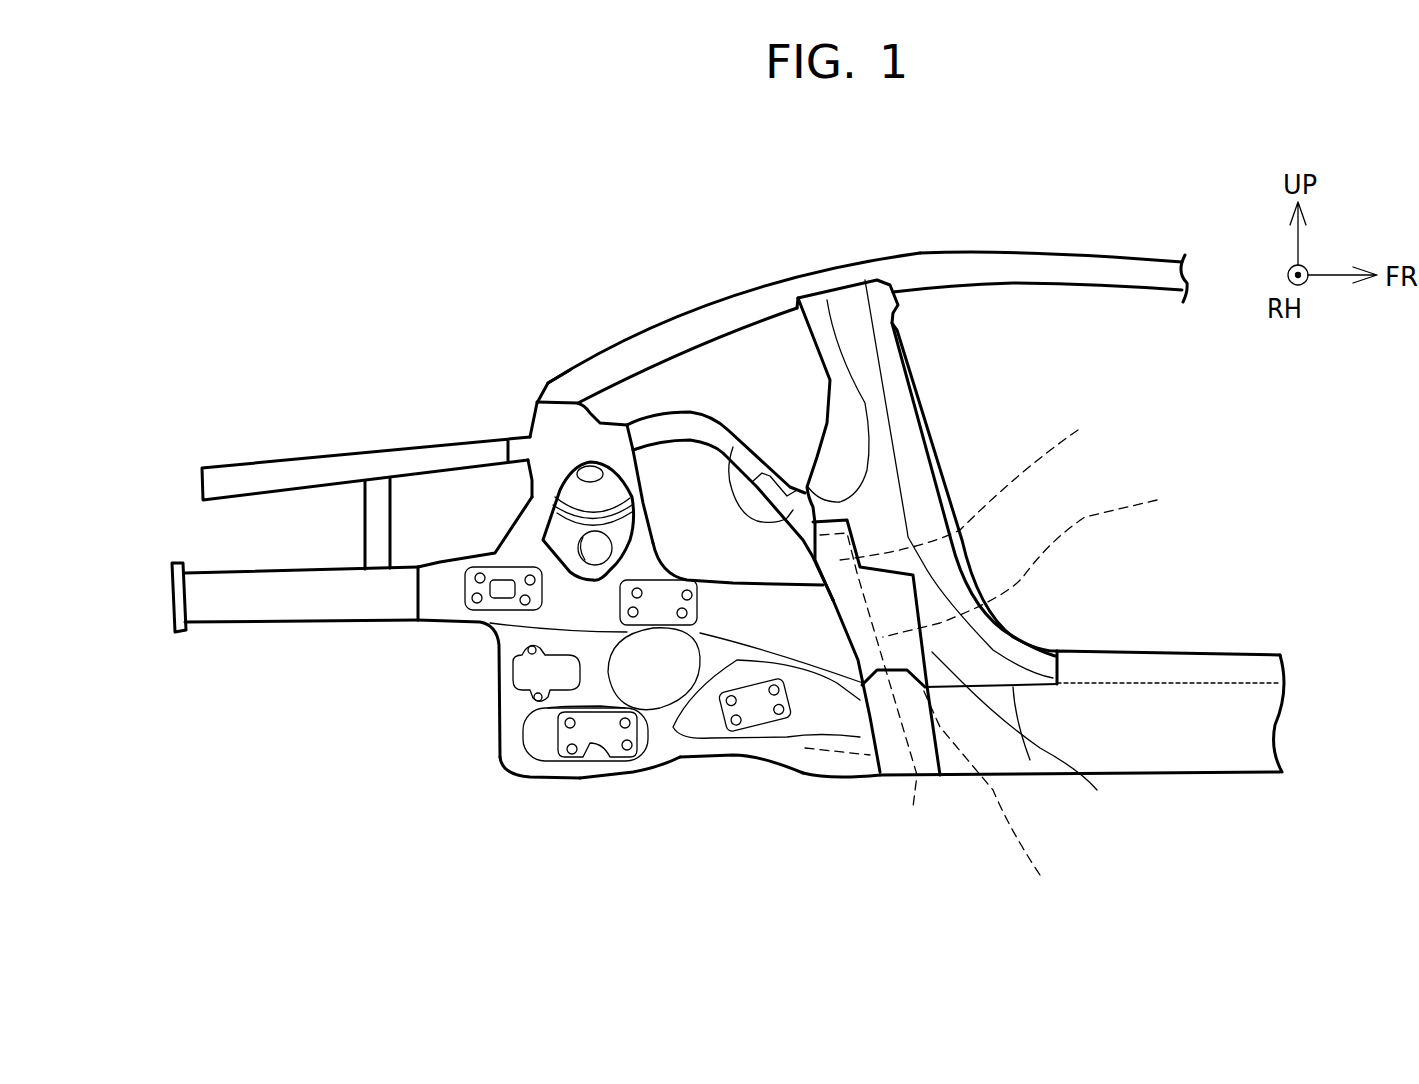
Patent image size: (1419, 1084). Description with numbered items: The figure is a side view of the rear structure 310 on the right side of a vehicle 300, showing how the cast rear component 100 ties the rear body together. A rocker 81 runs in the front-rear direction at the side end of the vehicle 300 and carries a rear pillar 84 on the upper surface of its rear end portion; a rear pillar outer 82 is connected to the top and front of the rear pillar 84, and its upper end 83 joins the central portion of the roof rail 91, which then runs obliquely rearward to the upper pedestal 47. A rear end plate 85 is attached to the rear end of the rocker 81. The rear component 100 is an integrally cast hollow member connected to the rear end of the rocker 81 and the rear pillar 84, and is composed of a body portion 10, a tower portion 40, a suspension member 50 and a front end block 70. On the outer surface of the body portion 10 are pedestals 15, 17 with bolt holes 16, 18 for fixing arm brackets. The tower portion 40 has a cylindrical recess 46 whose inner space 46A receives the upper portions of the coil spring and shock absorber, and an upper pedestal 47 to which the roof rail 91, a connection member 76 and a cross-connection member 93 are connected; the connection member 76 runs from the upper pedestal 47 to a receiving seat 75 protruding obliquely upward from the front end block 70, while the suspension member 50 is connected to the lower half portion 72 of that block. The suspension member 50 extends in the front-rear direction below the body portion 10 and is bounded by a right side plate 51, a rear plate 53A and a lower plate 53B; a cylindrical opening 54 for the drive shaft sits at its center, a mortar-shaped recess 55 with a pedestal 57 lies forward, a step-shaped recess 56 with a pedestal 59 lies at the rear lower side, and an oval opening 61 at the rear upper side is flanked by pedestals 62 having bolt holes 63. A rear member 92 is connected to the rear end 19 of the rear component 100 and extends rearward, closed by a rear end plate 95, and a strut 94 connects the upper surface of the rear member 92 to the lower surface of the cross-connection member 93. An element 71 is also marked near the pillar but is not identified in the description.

The rear structure 310 is at (265, 235).
The vehicle 300 is at (1177, 185).
The cross-connection member 93 is at (317, 457).
The strut 94 is at (363, 517).
The rear end plate 95 is at (172, 605).
The rear member 92 is at (237, 620).
The rear end 19 is at (417, 585).
The pedestal 17 is at (498, 567).
The bolt hole 18 is at (478, 573).
The tower portion 40 is at (530, 497).
The recess 46 is at (547, 477).
The space 46A is at (595, 478).
The upper pedestal 47 is at (557, 415).
The connection member 76 is at (705, 414).
The receiving seat 75 is at (733, 447).
The upper end 83 is at (868, 278).
The roof rail 91 is at (1080, 253).
The center pillar inner reinforcement 71 is at (1080, 428).
The front end block 70 is at (1160, 499).
The pedestal 15 is at (663, 603).
The bolt hole 16 is at (688, 590).
The body portion 10 is at (490, 632).
The oval opening 61 is at (530, 678).
The rear plate 53A is at (535, 699).
The bolt hole 63 is at (548, 708).
The pedestal 62 is at (527, 743).
The recess 56 is at (538, 780).
The rear component 100 is at (547, 776).
The pedestal 59 is at (592, 757).
The suspension member 50 is at (634, 774).
The cylindrical opening 54 is at (673, 750).
The lower plate 53B is at (710, 757).
The pedestal 57 is at (753, 713).
The right side plate 51 is at (803, 770).
The recess 55 is at (830, 737).
The rear end plate 85 is at (907, 777).
The lower half portion 72 is at (1040, 875).
The rear pillar outer 82 is at (1097, 790).
The rear pillar 84 is at (1030, 760).
The rocker 81 is at (1283, 717).